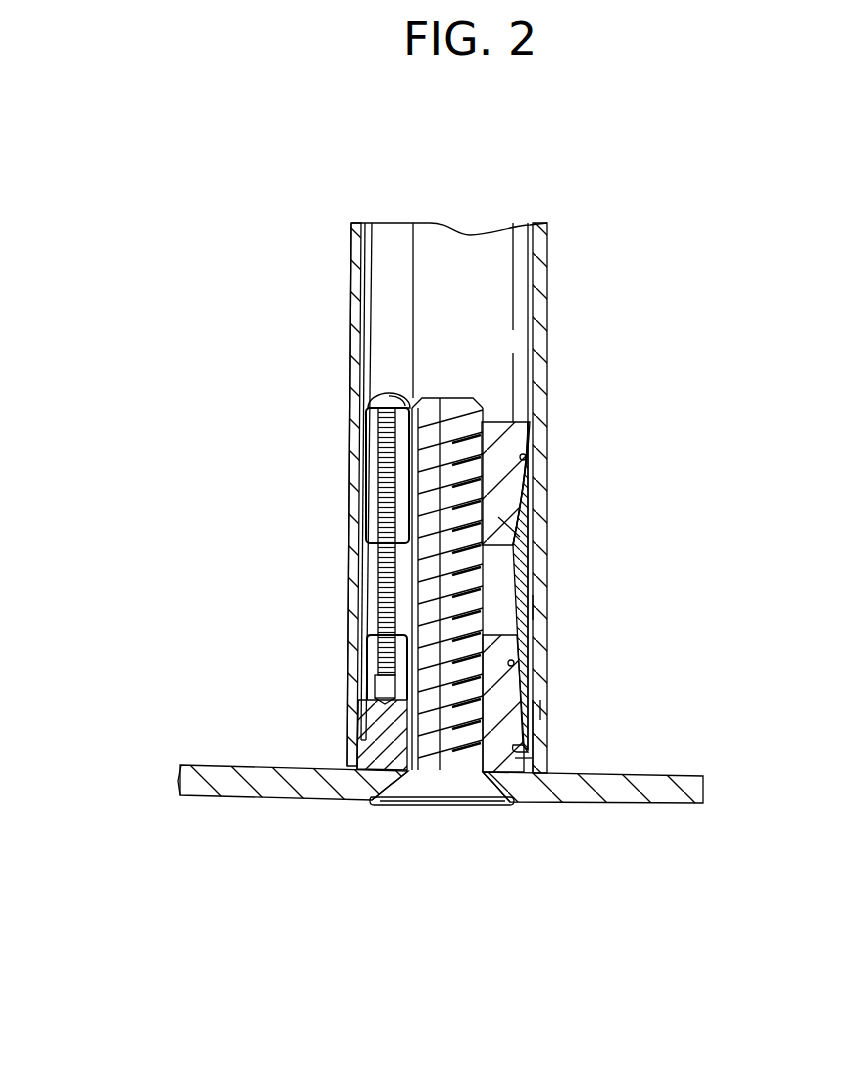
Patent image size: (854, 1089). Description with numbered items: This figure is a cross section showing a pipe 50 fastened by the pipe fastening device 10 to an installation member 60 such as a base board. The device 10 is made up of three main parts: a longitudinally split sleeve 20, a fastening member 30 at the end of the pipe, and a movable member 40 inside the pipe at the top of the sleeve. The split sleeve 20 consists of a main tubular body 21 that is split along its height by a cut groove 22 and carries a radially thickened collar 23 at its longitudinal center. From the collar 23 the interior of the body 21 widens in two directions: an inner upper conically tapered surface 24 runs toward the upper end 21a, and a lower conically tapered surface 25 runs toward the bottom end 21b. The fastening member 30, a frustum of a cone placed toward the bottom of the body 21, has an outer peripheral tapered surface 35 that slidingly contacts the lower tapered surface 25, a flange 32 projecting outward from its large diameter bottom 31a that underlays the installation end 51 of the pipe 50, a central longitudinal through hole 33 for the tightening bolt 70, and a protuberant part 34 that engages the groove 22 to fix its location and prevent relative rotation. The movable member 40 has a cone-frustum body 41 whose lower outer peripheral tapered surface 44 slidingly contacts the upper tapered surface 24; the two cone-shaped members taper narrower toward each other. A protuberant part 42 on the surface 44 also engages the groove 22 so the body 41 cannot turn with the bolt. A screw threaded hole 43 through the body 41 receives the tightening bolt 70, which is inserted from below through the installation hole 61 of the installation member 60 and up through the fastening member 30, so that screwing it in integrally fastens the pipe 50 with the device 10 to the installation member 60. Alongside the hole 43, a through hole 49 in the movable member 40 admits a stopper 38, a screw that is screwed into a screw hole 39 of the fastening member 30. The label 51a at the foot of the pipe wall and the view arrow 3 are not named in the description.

The pipe fastening device 10 is at (320, 515).
The section view arrow 3 is at (140, 553).
The split sleeve 20 is at (520, 617).
The main tubular body 21 is at (536, 586).
The upper end 21a is at (527, 488).
The bottom end 21b is at (530, 695).
The cut groove 22 is at (360, 615).
The radially thickened collar 23 is at (535, 607).
The inner upper conically tapered surface 24 is at (522, 524).
The lower conically tapered surface 25 is at (538, 657).
The fastening member 30 is at (383, 733).
The large diameter bottom end 31a is at (357, 715).
The flange 32 is at (523, 758).
The longitudinal through hole 33 is at (392, 782).
The protuberant part 34 is at (362, 680).
The outer peripheral tapered surface 35 is at (538, 710).
The stopper 38 is at (392, 393).
The screw hole 39 is at (366, 650).
The movable member 40 is at (520, 433).
The body 41 is at (520, 537).
The protuberant part 42 is at (372, 473).
The screw threaded hole 43 is at (458, 413).
The lower outer peripheral tapered surface 44 is at (530, 449).
The through hole 49 is at (368, 412).
The pipe 50 is at (545, 300).
The installation end 51 is at (348, 603).
The lower end of outer tube 51a is at (540, 750).
The installation member 60 is at (683, 782).
The installation hole 61 is at (494, 804).
The tightening bolt 70 is at (474, 807).